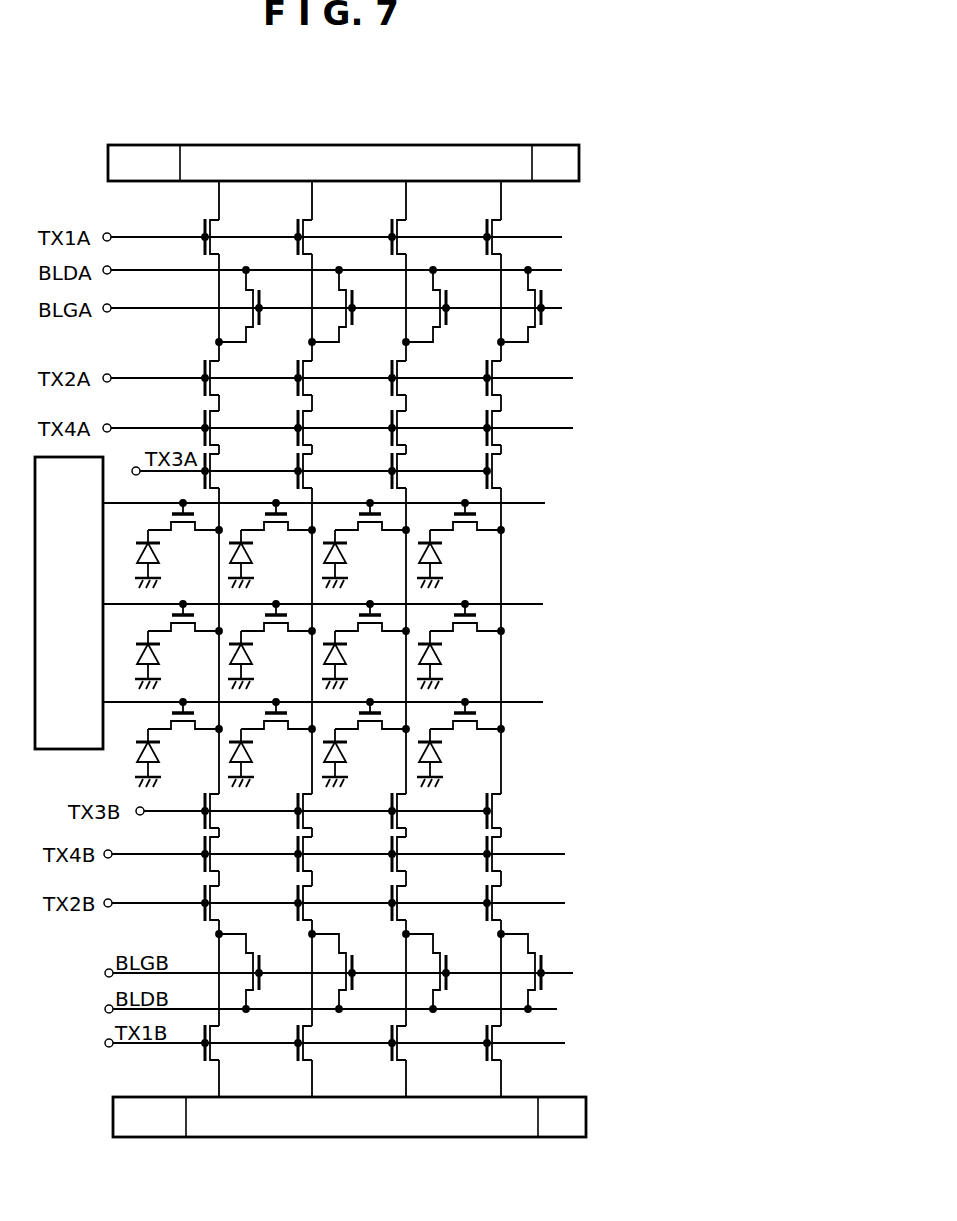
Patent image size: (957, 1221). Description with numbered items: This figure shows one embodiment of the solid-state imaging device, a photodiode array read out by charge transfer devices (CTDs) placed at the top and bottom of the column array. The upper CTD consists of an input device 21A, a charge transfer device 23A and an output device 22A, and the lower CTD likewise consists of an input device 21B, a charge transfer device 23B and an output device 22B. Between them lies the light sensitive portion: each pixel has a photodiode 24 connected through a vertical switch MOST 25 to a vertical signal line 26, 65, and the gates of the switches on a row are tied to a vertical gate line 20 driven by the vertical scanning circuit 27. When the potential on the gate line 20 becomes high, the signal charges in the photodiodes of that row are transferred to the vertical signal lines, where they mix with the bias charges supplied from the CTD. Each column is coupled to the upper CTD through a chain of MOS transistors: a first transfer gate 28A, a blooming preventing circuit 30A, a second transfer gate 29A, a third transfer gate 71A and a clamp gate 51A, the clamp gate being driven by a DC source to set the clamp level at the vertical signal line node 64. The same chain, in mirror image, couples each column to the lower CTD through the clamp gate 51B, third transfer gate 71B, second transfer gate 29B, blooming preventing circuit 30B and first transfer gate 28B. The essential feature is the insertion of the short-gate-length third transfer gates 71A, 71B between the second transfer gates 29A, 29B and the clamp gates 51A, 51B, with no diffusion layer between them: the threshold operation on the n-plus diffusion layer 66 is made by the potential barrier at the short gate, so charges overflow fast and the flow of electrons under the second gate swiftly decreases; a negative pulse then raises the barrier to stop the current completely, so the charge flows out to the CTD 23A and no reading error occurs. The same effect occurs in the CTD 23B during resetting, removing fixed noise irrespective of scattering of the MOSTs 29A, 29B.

The input device 21A is at (122, 145).
The charge transfer device 23A is at (282, 145).
The output device 22A is at (546, 145).
The first transfer gate 28A is at (517, 226).
The blooming preventing circuit 30A is at (545, 298).
The second transfer gate 29A is at (508, 365).
The third transfer gate 71A is at (508, 420).
The n+ diffusion layer 66 is at (502, 445).
The clamp gate 51A is at (502, 467).
The vertical signal line portion 64 is at (502, 498).
The vertical gate line 20 is at (537, 503).
The vertical signal line 26 is at (502, 565).
The vertical signal line 65 is at (502, 590).
The vertical switch MOST 25 is at (478, 619).
The photodiode 24 is at (443, 660).
The vertical scanning circuit 27 is at (65, 752).
The clamp gate 51B is at (504, 808).
The third transfer gate 71B is at (504, 862).
The second transfer gate 29B is at (504, 913).
The blooming preventing circuit 30B is at (545, 980).
The first transfer gate 28B is at (504, 1033).
The input device 21B is at (127, 1138).
The charge transfer device 23B is at (270, 1138).
The output device 22B is at (557, 1138).